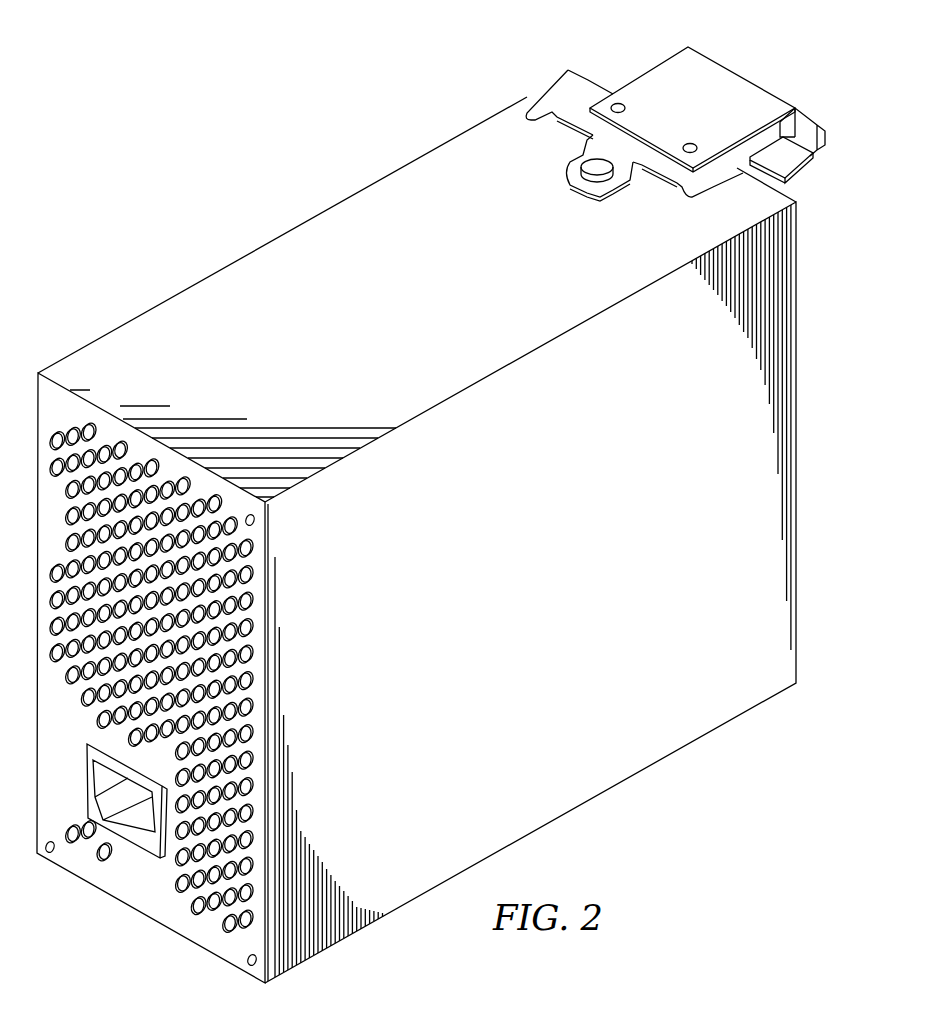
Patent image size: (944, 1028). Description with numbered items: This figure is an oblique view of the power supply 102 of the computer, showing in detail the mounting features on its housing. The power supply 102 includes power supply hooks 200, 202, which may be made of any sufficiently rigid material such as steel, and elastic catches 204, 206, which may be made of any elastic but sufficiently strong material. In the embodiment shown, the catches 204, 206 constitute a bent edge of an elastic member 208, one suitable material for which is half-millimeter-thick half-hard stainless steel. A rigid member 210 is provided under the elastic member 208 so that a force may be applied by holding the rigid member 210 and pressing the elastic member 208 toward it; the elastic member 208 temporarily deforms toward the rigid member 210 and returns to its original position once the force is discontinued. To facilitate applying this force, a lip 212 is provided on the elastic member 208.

The power supply 102 is at (549, 606).
The power supply hook 200 is at (533, 108).
The power supply hook 202 is at (667, 192).
The elastic catch 204 is at (705, 54).
The elastic catch 206 is at (785, 107).
The elastic member 208 is at (727, 113).
The rigid member 210 is at (808, 163).
The lip 212 is at (813, 123).